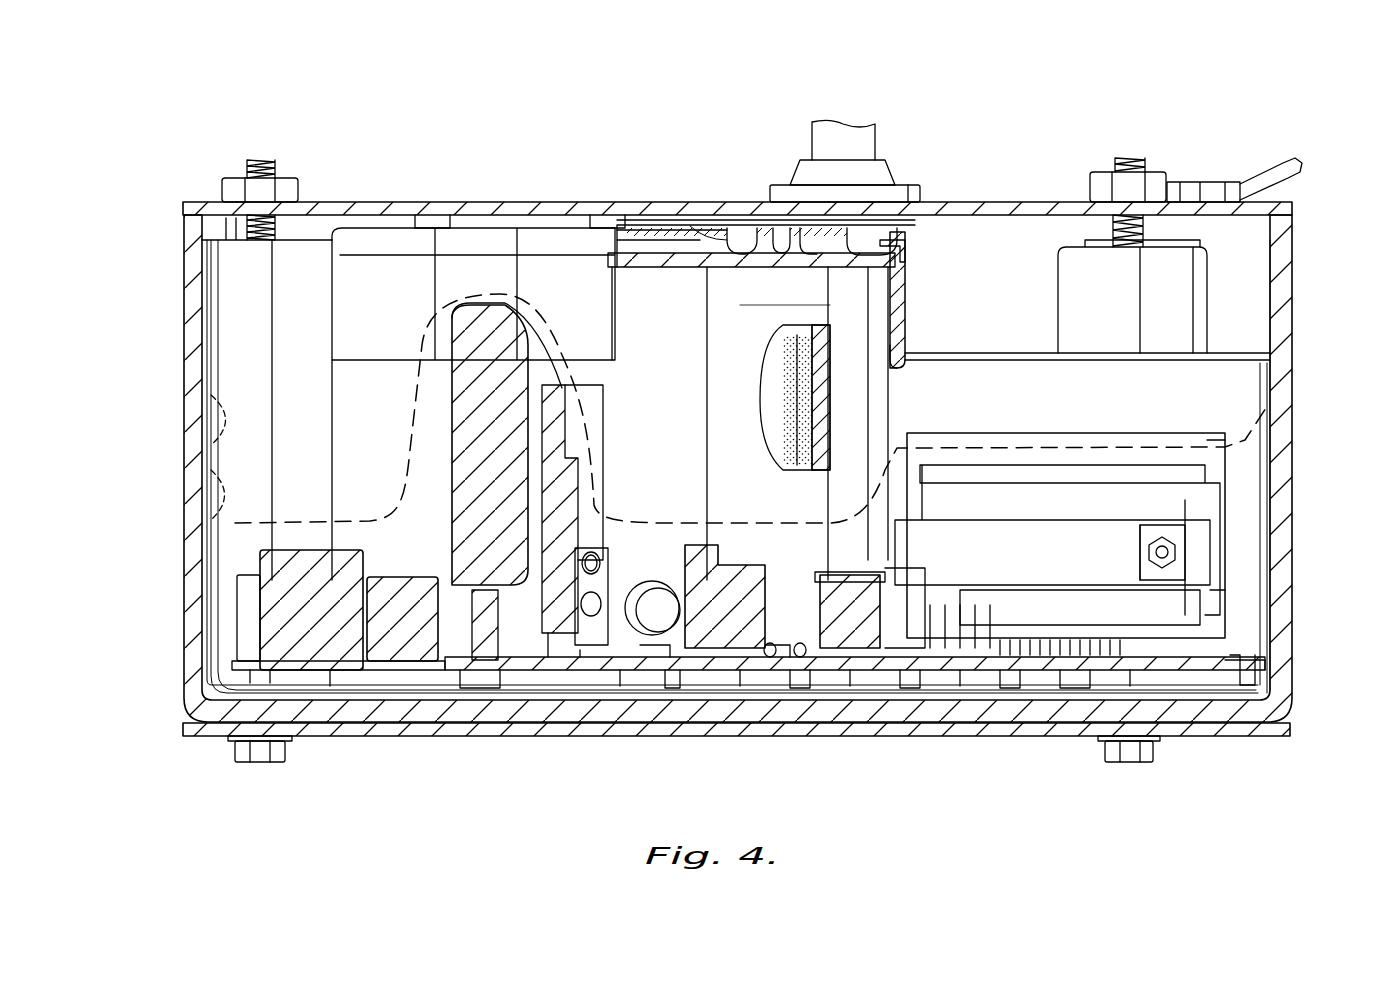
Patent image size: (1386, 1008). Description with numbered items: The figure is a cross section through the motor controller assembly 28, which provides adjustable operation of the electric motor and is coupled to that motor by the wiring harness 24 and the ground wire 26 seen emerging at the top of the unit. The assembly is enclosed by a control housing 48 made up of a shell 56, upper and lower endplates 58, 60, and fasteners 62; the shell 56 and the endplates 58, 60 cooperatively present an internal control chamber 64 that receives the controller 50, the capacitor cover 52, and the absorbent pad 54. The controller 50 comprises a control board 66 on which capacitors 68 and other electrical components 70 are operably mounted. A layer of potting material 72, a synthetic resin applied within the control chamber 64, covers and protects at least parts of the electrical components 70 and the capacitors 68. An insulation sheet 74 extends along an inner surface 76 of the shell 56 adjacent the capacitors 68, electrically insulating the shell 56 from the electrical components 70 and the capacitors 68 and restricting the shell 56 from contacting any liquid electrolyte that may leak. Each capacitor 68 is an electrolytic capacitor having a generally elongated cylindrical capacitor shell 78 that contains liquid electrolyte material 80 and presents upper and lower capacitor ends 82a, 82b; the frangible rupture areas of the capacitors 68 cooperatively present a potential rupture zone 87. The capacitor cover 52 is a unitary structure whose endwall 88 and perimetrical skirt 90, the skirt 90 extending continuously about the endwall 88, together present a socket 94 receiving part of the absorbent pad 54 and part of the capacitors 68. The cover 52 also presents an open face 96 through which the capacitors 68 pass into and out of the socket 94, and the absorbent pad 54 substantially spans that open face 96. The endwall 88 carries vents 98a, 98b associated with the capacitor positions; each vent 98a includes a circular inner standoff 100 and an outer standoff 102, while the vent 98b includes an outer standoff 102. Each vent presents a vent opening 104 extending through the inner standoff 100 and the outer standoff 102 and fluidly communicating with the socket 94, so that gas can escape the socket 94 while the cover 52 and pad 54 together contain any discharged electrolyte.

The wiring harness 24 is at (843, 138).
The ground wire 26 is at (1285, 176).
The motor controller assembly 28 is at (1138, 78).
The control housing 48 is at (1287, 336).
The controller 50 is at (1196, 660).
The capacitor cover 52 is at (852, 237).
The absorbent pad 54 is at (683, 255).
The shell 56 is at (196, 322).
The upper endplate 58 is at (362, 205).
The lower endplate 60 is at (478, 728).
The fasteners 62 is at (243, 170).
The internal control chamber 64 is at (1272, 285).
The control board 66 is at (1225, 672).
The capacitors 68 is at (800, 305).
The electrical components 70 is at (652, 605).
The potting material 72 is at (1290, 416).
The insulation sheet 74 is at (215, 418).
The inner surface 76 is at (222, 506).
The capacitor shell 78 is at (812, 410).
The liquid electrolyte material 80 is at (815, 452).
The upper capacitor end 82a is at (765, 150).
The lower capacitor end 82b is at (796, 755).
The rupture zone 87 is at (660, 180).
The endwall 88 is at (645, 240).
The perimetrical skirt 90 is at (905, 312).
The socket 94 is at (905, 262).
The open face 96 is at (905, 356).
The vent 98a is at (800, 242).
The vent 98b is at (630, 225).
The inner standoff 100 is at (748, 250).
The outer standoff 102 is at (752, 250).
The vent opening 104 is at (778, 235).